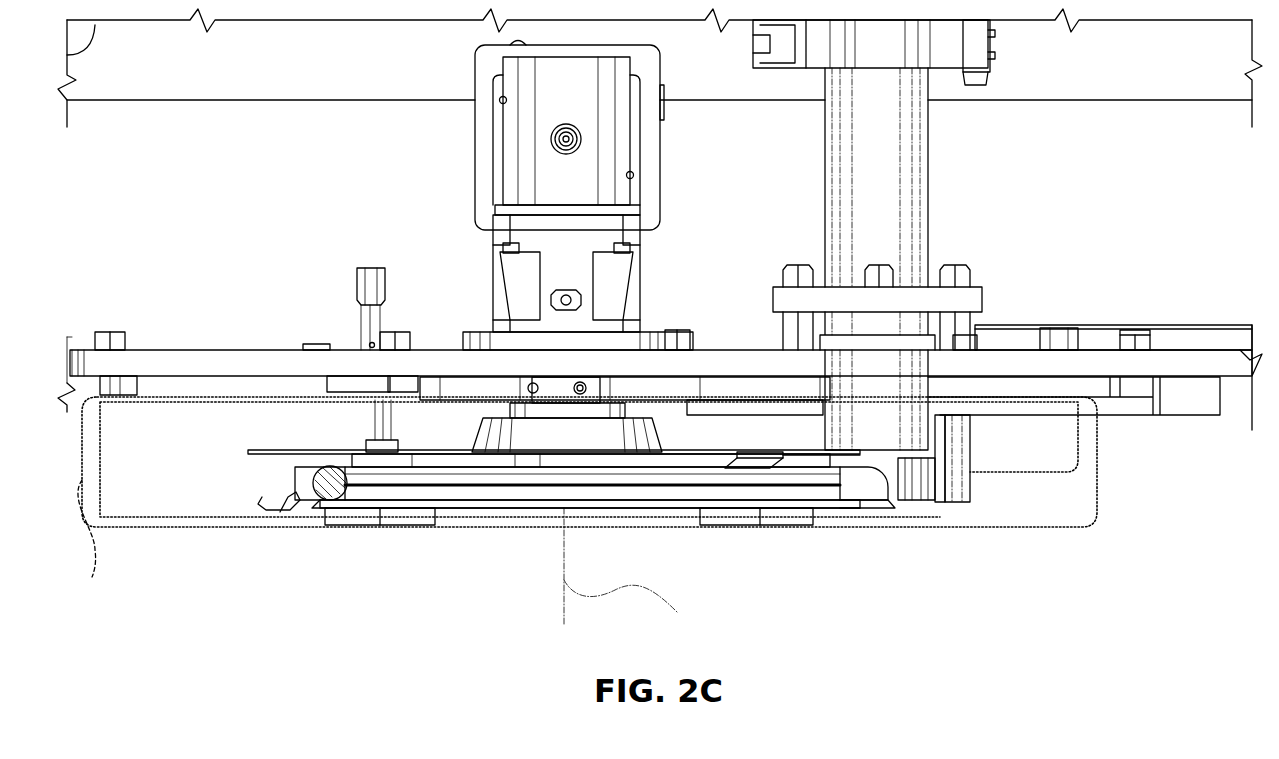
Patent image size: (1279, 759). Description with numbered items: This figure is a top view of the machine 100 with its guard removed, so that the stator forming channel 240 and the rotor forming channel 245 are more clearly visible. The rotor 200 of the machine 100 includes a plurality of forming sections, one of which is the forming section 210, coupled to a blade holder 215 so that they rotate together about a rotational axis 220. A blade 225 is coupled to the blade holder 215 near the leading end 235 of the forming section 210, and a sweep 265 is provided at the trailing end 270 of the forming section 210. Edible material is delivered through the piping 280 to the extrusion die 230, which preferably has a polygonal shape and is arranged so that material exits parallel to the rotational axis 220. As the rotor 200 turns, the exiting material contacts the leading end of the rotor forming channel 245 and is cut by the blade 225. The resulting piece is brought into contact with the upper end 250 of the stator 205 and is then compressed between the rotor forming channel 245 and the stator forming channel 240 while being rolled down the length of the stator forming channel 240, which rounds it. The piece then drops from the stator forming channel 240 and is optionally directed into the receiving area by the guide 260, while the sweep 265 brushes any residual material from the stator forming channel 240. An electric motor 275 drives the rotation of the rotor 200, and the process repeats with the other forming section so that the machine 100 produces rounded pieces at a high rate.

The machine 100 is at (196, 643).
The rotor 200 is at (305, 488).
The stator 205 is at (946, 472).
The forming section 210 is at (415, 503).
The blade holder 215 is at (527, 457).
The rotational axis 220 is at (632, 575).
The blade 225 is at (822, 452).
The extrusion die 230 is at (893, 420).
The leading end 235 is at (850, 508).
The stator forming channel 240 is at (896, 508).
The rotor forming channel 245 is at (468, 494).
The upper end 250 is at (942, 518).
The guide 260 is at (660, 434).
The sweep 265 is at (300, 483).
The trailing end 270 is at (338, 512).
The electric motor 275 is at (548, 165).
The piping 280 is at (883, 192).